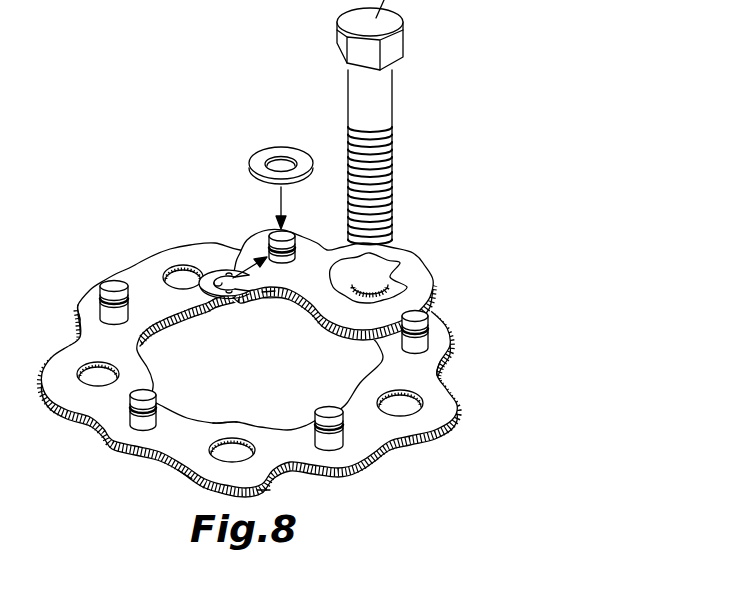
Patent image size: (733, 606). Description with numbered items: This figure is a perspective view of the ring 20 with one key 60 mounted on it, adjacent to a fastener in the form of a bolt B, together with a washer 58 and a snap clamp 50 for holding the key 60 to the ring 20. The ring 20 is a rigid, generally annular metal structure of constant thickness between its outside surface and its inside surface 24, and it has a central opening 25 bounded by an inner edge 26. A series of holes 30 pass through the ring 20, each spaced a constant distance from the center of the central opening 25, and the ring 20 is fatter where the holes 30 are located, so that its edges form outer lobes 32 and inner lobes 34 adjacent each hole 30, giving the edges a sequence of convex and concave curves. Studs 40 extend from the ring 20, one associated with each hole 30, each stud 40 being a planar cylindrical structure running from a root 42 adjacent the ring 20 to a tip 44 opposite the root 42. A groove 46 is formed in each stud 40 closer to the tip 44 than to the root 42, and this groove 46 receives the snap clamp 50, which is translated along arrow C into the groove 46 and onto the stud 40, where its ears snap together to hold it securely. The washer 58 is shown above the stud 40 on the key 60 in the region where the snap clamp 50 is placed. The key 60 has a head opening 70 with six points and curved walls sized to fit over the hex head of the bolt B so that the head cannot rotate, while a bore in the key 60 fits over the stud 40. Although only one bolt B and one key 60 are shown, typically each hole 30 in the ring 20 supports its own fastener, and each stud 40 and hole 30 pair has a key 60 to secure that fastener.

The ring 20 is at (107, 440).
The inside surface 24 is at (185, 477).
The central opening 25 is at (260, 359).
The inner edge 26 is at (268, 297).
The hole 30 is at (180, 277).
The outer lobe 32 is at (263, 490).
The inner lobe 34 is at (226, 418).
The stud 40 is at (266, 341).
The root 42 is at (80, 333).
The tip 44 is at (110, 287).
The groove 46 is at (100, 305).
The snap clamp 50 is at (212, 290).
The washer 58 is at (271, 150).
The key 60 is at (316, 240).
The head opening 70 is at (393, 265).
The bolt B is at (386, 100).
The arrow C is at (252, 240).